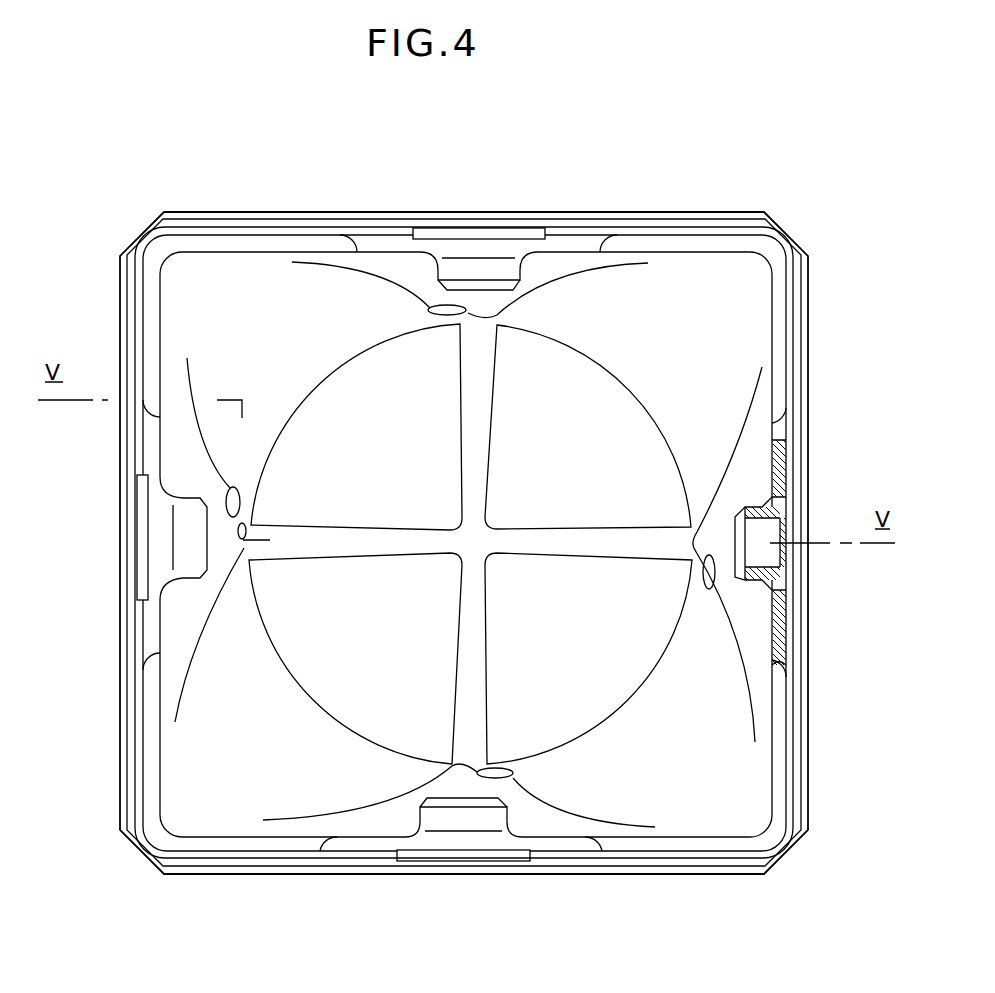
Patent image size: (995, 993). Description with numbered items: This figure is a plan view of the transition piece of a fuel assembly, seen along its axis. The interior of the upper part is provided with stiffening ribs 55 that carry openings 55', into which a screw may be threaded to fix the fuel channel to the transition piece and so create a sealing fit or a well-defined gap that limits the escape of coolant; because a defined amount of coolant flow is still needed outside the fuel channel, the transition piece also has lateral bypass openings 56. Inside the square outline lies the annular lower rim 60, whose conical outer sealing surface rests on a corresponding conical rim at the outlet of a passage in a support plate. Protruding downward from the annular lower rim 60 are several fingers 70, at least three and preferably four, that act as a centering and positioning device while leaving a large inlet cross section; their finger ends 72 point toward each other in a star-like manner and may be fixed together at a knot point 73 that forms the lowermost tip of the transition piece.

The stiffening ribs 55 is at (818, 549).
The openings 55' is at (824, 567).
The lateral bypass openings 56 is at (708, 595).
The annular lower rim 60 is at (647, 408).
The fingers 70 is at (367, 535).
The finger ends 72 is at (582, 543).
The knot point 73 is at (463, 545).